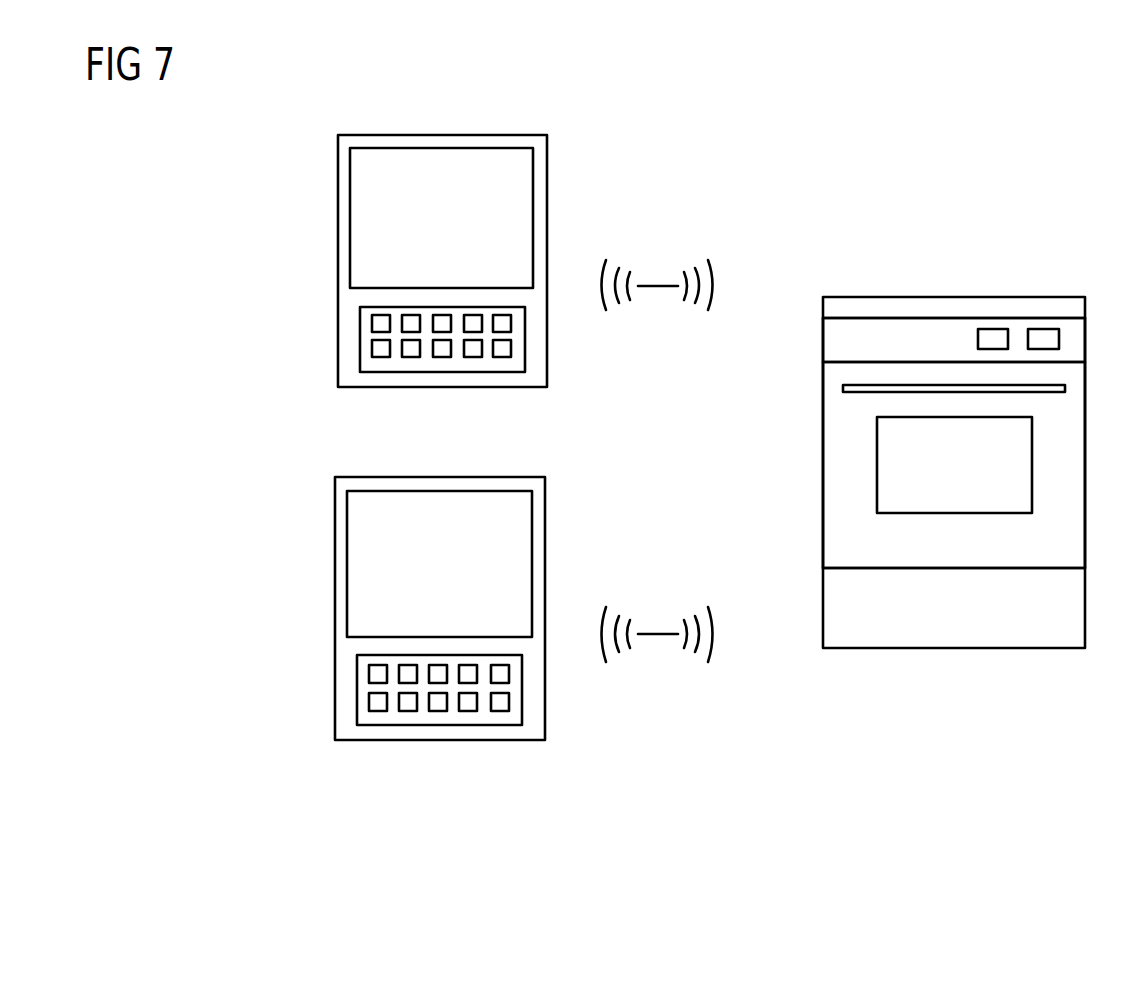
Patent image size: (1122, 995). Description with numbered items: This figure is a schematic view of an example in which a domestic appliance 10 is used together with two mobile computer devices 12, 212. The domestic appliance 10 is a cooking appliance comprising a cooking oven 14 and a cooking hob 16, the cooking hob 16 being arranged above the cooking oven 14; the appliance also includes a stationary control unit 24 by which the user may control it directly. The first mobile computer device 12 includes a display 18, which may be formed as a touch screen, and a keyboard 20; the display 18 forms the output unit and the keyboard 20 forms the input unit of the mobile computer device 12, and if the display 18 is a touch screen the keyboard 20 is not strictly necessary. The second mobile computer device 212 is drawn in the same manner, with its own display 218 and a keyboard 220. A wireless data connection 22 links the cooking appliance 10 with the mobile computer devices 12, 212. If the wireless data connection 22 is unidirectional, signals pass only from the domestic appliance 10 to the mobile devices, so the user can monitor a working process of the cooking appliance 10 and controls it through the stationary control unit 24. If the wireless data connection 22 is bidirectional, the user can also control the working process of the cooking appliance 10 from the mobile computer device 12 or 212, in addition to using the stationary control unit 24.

The domestic appliance 10 is at (803, 274).
The mobile computer device 12 is at (366, 92).
The cooking oven 14 is at (845, 465).
The cooking hob 16 is at (998, 308).
The display 18 is at (488, 178).
The keyboard 20 is at (397, 362).
The wireless data connection 22 is at (655, 285).
The stationary control unit 24 is at (897, 340).
The mobile computer device 212 is at (360, 510).
The display of second mobile device 218 is at (486, 522).
The keyboard 220 is at (393, 718).